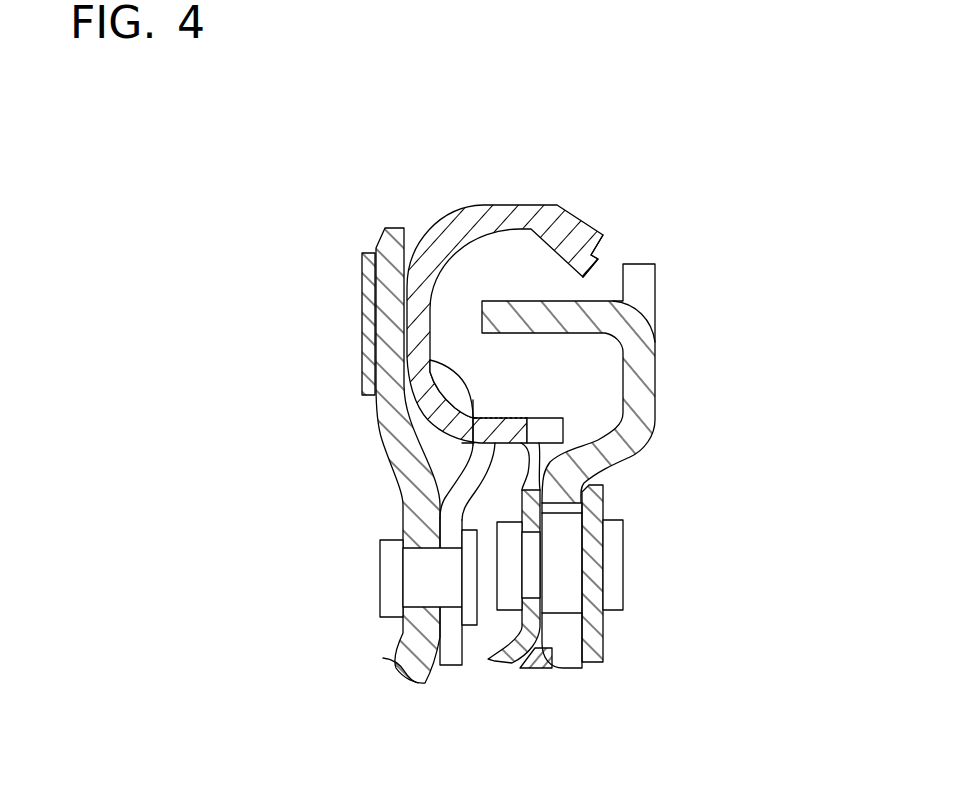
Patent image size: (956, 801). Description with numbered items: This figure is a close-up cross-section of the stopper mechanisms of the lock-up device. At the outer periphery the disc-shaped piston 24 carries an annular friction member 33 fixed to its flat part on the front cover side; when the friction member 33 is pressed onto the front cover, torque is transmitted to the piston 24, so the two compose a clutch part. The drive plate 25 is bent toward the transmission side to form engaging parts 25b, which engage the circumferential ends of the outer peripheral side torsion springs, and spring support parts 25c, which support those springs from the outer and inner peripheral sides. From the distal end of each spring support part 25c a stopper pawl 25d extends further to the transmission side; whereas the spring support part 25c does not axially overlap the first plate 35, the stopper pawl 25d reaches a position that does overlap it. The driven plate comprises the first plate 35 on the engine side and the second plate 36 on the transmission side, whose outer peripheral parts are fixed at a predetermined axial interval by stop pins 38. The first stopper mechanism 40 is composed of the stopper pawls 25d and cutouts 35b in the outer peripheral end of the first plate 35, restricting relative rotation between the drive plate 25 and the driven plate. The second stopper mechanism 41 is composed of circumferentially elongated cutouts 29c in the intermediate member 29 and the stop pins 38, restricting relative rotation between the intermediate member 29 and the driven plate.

The piston 24 is at (379, 442).
The drive plate 25 is at (461, 198).
The engaging part 25b is at (445, 362).
The spring support part 25c is at (515, 423).
The stopper pawl 25d is at (548, 430).
The intermediate member 29 is at (668, 392).
The cutout 29c is at (562, 518).
The friction member 33 is at (369, 288).
The first plate 35 is at (507, 652).
The cutout 35b is at (542, 462).
The second plate 36 is at (582, 646).
The stop pin 38 is at (613, 552).
The first stopper mechanism 40 is at (509, 486).
The second stopper mechanism 41 is at (661, 593).